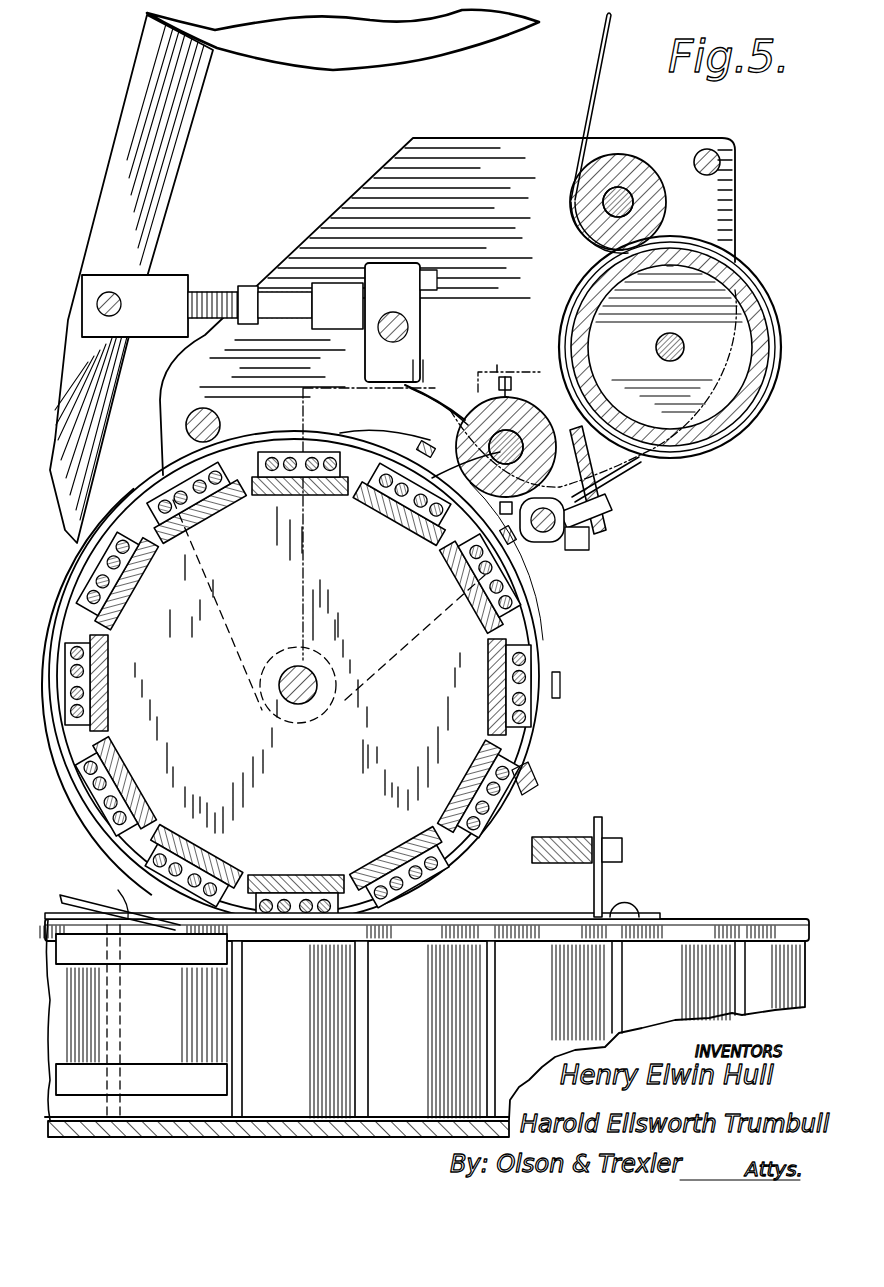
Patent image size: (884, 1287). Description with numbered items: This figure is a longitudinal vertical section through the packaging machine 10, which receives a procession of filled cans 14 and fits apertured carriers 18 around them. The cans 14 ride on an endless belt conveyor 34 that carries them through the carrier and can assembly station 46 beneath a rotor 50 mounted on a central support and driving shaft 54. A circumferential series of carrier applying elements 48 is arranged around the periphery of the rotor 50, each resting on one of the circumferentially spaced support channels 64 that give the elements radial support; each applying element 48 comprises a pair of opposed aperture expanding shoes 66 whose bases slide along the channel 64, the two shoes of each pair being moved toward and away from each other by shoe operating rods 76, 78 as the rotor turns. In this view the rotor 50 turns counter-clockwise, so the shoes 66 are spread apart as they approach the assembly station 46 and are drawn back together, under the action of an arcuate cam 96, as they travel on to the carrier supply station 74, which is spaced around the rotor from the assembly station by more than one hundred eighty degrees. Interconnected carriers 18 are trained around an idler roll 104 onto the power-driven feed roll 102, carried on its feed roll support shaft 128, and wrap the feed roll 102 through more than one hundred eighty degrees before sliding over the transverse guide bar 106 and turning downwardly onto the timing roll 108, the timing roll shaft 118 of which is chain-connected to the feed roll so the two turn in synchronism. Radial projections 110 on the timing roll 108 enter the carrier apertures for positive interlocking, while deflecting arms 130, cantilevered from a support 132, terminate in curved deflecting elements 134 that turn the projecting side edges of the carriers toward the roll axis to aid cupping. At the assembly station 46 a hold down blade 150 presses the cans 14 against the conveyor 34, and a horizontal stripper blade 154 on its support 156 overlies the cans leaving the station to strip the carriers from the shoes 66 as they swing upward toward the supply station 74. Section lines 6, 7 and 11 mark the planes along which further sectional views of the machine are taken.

The section line 6- 6 is at (555, 283).
The section line 7- 7 is at (158, 500).
The packaging machine 10 is at (445, 145).
The section line 11- 11 is at (598, 448).
The filled cans 14 is at (675, 955).
The apertured carrier 18 is at (600, 68).
The endless belt conveyor 34 is at (176, 1137).
The carrier and can assembly station 46 is at (344, 676).
The carrier applying element 48 is at (563, 684).
The rotor 50 is at (538, 625).
The central support and driving shaft 54 is at (300, 666).
The support channel 64 is at (330, 497).
The aperture expanding shoe 66 is at (557, 660).
The carrier supply station 74 is at (540, 540).
The shoe operating rod 76 is at (248, 492).
The shoe operating rod 78 is at (215, 505).
The arcuate cam 96 is at (545, 745).
The feed roll 102 is at (679, 361).
The idler roll 104 is at (655, 202).
The transverse guide bar 106 is at (554, 433).
The timing roll 108 is at (482, 410).
The radial projection 110 is at (506, 375).
The timing roll shaft 118 is at (545, 405).
The feed roll support shaft 128 is at (681, 358).
The deflecting arm 130 is at (492, 429).
The support 132 is at (420, 335).
The curved deflecting element 134 is at (612, 493).
The hold down blade 150 is at (118, 893).
The stripper blade 154 is at (462, 913).
The support 156 is at (555, 864).